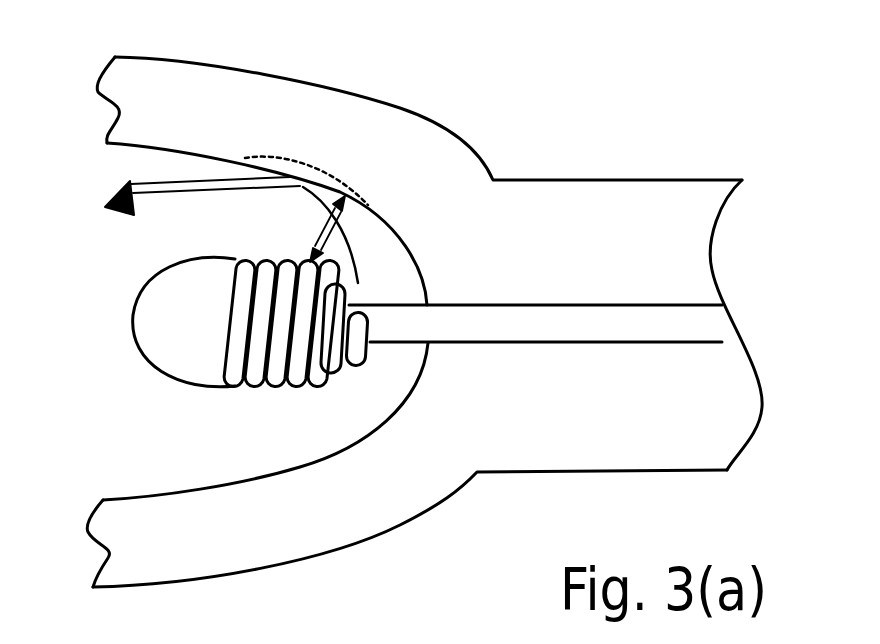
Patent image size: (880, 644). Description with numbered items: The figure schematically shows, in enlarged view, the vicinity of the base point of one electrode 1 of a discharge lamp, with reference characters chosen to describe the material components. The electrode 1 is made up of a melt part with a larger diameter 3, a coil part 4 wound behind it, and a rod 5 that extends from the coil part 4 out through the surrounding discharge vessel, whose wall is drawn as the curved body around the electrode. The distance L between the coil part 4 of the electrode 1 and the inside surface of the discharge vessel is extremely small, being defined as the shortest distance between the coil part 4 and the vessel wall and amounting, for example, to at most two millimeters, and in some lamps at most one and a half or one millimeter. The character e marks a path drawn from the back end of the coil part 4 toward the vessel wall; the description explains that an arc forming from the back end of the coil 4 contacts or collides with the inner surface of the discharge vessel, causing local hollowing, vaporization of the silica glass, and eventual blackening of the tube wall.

The electrode 1 is at (127, 358).
The melt part with a larger diameter 3 is at (180, 395).
The coil part 4 is at (255, 393).
The rod 5 is at (613, 297).
The emitted light ray e is at (185, 185).
The distance L is at (343, 207).